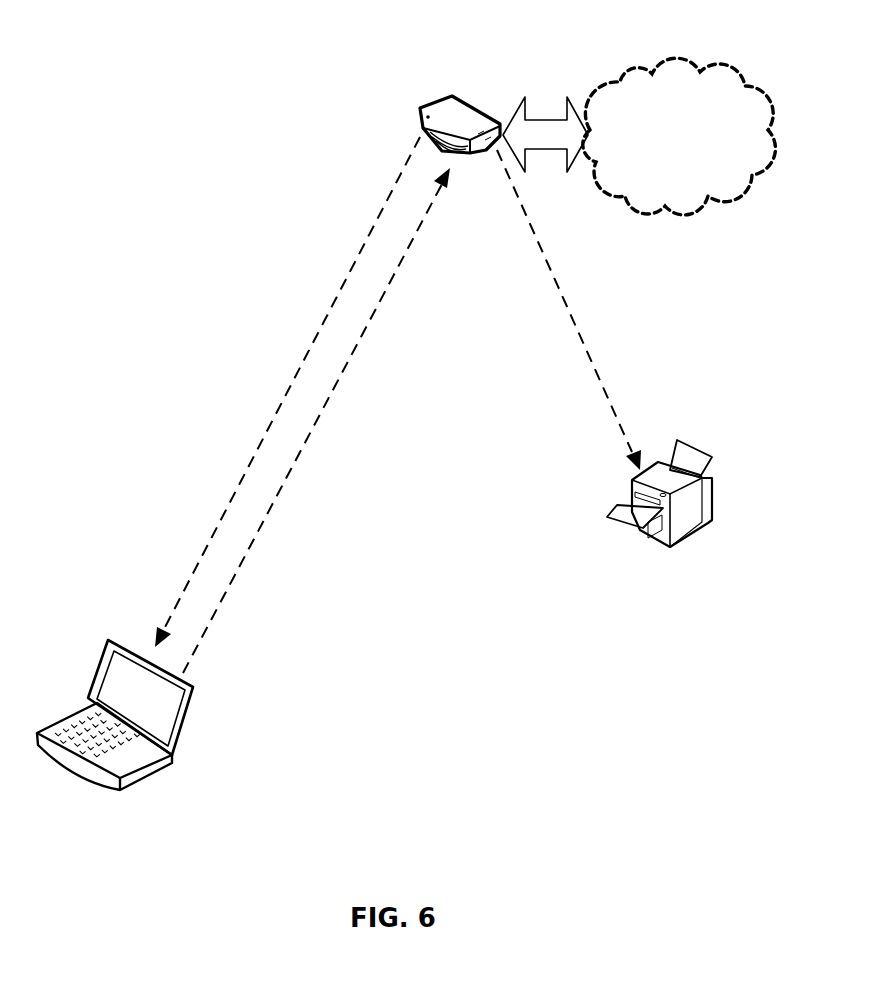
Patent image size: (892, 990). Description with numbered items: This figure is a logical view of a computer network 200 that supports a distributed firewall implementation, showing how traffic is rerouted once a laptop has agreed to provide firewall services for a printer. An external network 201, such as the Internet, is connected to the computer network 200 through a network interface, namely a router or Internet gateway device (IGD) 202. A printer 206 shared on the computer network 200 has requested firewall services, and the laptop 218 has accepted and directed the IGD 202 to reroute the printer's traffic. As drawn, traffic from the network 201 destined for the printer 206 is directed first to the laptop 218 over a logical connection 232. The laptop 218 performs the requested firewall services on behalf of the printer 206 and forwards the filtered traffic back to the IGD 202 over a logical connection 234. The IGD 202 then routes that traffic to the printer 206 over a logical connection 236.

The computer network 200 is at (155, 132).
The external network 201 is at (665, 220).
The Internet gateway device 202 is at (423, 107).
The printer 206 is at (712, 487).
The laptop 218 is at (137, 780).
The logical connection 232 is at (323, 320).
The logical connection 234 is at (232, 582).
The logical connection 236 is at (610, 408).